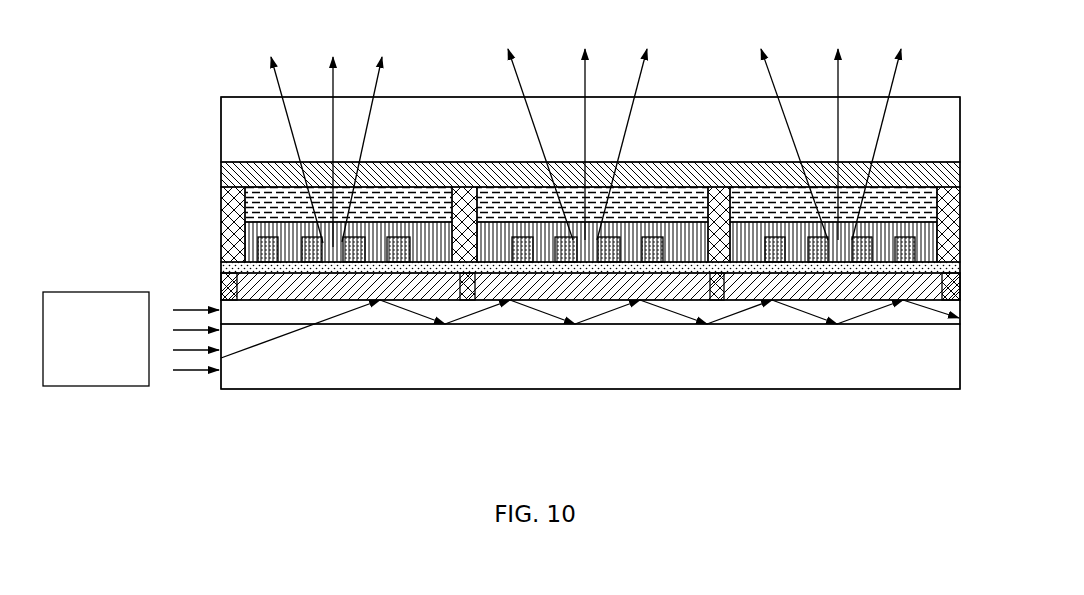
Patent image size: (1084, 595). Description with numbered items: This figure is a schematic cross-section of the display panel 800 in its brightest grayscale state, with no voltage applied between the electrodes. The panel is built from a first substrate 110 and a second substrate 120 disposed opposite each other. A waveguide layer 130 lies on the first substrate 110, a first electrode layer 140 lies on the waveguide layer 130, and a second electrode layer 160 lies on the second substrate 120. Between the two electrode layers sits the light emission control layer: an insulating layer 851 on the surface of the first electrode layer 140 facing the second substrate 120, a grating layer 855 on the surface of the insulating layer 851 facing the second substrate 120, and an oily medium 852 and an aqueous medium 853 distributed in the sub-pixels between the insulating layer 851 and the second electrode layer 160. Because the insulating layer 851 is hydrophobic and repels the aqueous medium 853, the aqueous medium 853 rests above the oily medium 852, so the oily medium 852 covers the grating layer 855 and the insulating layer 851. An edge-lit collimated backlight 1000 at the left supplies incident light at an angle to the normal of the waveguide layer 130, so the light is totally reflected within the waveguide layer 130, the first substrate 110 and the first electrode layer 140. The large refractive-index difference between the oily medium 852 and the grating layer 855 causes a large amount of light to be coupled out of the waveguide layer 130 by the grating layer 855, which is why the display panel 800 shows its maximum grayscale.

The display panel 800 is at (188, 85).
The edge-lit collimated backlight 1000 is at (80, 292).
The second substrate 120 is at (468, 125).
The second electrode layer 160 is at (668, 177).
The first substrate 110 is at (323, 358).
The waveguide layer 130 is at (425, 315).
The first electrode layer 140 is at (538, 285).
The oily medium 852 is at (631, 252).
The grating layer 855 is at (652, 248).
The aqueous medium 853 is at (745, 208).
The insulating layer 851 is at (848, 268).